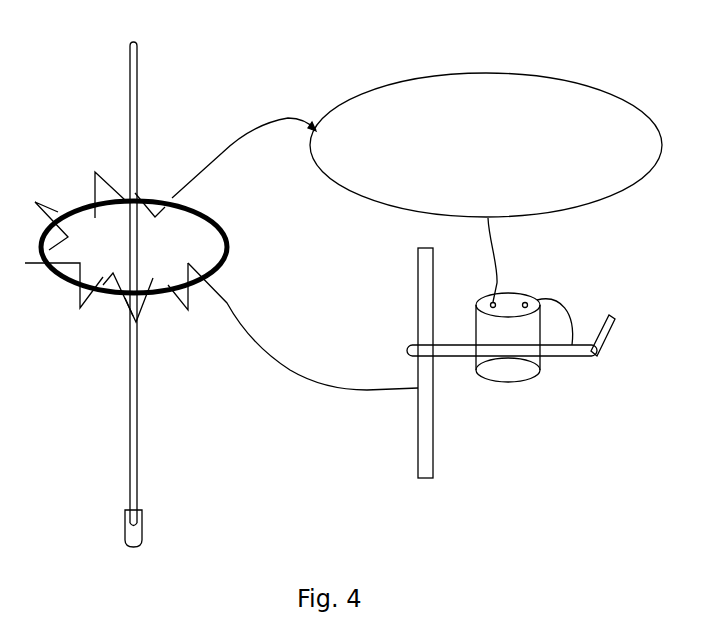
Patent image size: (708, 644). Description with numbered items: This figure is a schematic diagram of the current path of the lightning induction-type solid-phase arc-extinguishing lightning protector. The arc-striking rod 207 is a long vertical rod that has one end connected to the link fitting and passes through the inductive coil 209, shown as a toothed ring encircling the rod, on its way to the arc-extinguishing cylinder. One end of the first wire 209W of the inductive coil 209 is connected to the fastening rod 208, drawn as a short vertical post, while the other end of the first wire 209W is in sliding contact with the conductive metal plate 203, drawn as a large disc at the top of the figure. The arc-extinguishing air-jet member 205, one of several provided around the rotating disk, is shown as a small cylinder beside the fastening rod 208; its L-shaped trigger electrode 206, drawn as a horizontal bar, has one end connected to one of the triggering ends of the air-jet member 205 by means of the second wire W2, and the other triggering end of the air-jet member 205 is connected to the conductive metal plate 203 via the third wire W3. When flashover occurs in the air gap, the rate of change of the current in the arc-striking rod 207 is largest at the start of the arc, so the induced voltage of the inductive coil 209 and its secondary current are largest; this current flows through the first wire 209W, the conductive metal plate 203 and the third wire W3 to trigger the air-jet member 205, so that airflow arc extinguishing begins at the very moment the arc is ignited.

The conductive metal plate 203 is at (518, 100).
The arc-extinguishing air-jet member 205 is at (510, 323).
The L-shaped trigger electrode 206 is at (553, 358).
The arc-striking rod 207 is at (138, 78).
The fastening rod 208 is at (433, 447).
The inductive coil 209 is at (130, 195).
The first wire 209W is at (222, 153).
The second wire W2 is at (573, 322).
The third wire W3 is at (497, 287).